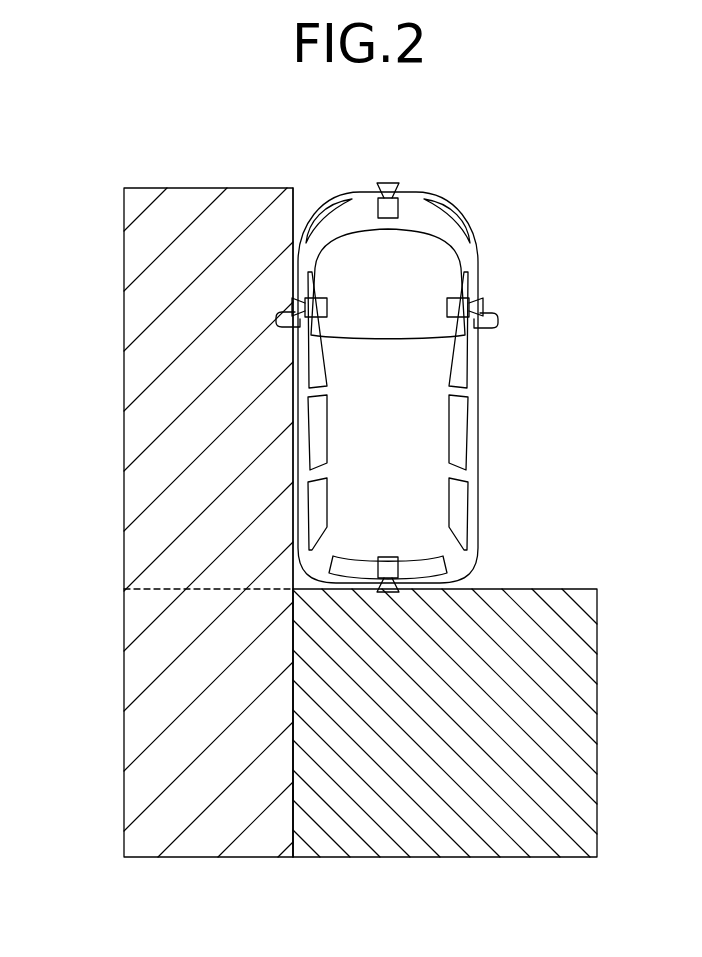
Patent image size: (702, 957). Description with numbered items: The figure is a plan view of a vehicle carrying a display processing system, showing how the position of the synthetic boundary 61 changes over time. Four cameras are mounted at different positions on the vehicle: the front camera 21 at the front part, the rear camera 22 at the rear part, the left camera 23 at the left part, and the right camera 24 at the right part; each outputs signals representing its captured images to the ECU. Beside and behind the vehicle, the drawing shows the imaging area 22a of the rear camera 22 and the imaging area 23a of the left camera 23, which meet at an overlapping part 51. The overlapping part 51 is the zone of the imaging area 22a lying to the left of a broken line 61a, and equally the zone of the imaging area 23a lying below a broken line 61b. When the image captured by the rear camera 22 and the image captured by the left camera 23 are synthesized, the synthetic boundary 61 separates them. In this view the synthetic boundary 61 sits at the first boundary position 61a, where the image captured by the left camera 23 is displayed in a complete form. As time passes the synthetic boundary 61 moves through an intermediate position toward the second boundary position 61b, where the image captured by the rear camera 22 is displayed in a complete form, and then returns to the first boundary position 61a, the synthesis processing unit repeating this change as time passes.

The front camera 21 is at (388, 183).
The rear camera 22 is at (388, 592).
The imaging area of the rear camera 22a is at (400, 797).
The left camera 23 is at (292, 306).
The imaging area of the left camera 23a is at (172, 457).
The right camera 24 is at (483, 303).
The overlapping part 51 is at (155, 658).
The synthetic boundary 61 is at (293, 757).
The first boundary position 61a is at (294, 793).
The second boundary position 61b is at (172, 588).